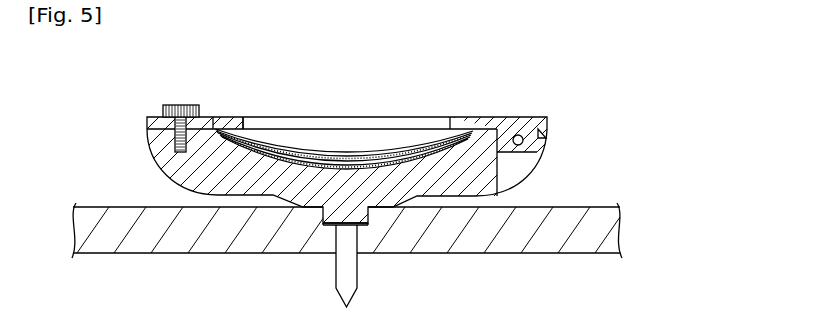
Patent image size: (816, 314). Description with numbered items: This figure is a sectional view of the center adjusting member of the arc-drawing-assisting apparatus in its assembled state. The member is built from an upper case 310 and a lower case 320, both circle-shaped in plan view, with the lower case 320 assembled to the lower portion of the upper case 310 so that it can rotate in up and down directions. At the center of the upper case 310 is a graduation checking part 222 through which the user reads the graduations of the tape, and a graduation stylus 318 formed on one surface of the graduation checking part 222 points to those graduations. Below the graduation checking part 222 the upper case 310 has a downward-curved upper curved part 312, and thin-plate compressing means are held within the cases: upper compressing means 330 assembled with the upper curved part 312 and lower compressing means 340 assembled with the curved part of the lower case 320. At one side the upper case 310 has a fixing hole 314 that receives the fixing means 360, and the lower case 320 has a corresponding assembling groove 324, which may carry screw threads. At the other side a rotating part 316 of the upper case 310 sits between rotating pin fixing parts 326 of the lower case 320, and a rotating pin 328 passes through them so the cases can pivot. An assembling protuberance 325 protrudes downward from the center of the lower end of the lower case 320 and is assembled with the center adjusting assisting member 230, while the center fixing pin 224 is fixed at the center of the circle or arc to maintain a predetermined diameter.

The upper case 310 is at (146, 126).
The fixing hole 314 is at (146, 122).
The rotating part 316 is at (542, 138).
The graduation stylus 318 is at (229, 125).
The lower case 320 is at (167, 149).
The assembling groove 324 is at (178, 156).
The rotating pin fixing part 326 is at (518, 166).
The rotating pin 328 is at (519, 133).
The upper compressing means 330 is at (432, 152).
The lower compressing means 340 is at (404, 147).
The fixing means 360 is at (186, 110).
The graduation checking part 222 is at (294, 123).
The upper curved part 312 is at (344, 140).
The center fixing pin 224 is at (342, 278).
The center adjusting assisting member 230 is at (610, 224).
The assembling protuberance 325 is at (362, 226).